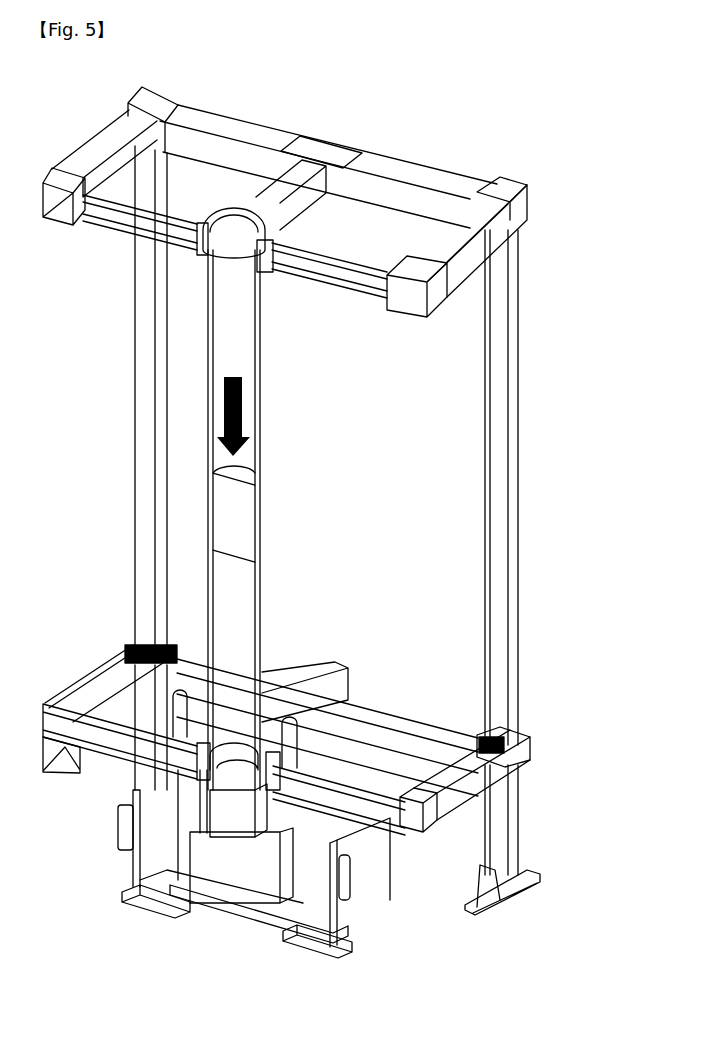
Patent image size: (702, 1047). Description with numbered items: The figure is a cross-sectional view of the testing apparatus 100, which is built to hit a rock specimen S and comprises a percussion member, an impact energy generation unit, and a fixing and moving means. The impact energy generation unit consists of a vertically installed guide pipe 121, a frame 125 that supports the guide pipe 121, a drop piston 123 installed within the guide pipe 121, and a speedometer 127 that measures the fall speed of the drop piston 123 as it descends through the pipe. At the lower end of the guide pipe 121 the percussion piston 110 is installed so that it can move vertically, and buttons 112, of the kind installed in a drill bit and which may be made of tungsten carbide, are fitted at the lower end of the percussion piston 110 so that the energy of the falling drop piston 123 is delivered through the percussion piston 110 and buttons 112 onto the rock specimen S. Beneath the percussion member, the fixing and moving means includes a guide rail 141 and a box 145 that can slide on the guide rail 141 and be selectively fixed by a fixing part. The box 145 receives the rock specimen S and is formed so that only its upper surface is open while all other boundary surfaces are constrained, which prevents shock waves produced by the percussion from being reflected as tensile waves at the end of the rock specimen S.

The testing apparatus 100 is at (515, 962).
The percussion piston 110 is at (207, 803).
The buttons 112 is at (223, 793).
The guide pipe 121 is at (262, 366).
The drop piston 123 is at (240, 505).
The frame 125 is at (145, 378).
The speedometer 127 is at (170, 686).
The guide rail 141 is at (135, 905).
The box 145 is at (360, 897).
The rock specimen S is at (243, 877).